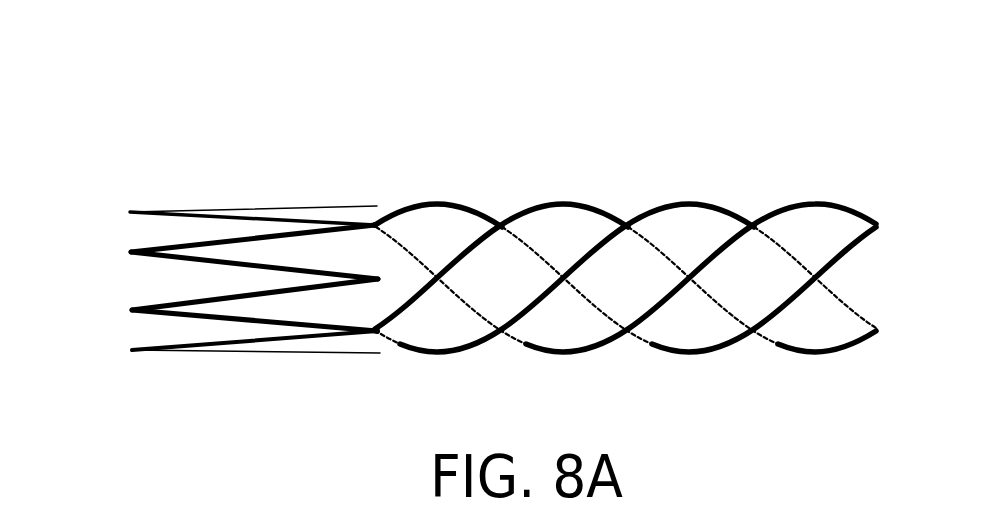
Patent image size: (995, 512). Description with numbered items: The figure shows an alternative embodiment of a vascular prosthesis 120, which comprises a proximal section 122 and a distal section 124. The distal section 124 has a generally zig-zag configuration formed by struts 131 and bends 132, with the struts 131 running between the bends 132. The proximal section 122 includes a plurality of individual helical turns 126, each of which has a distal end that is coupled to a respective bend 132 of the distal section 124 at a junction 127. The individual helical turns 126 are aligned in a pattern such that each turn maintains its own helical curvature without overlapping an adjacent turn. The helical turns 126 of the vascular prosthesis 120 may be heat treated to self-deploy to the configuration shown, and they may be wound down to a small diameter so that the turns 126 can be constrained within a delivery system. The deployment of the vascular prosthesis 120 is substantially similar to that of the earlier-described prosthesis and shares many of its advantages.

The vascular prosthesis 120 is at (525, 123).
The proximal section 122 is at (643, 195).
The distal section 124 is at (252, 198).
The helical turns 126 is at (853, 310).
The junctions 127 is at (375, 225).
The struts 131 is at (175, 300).
The bends 132 is at (128, 253).